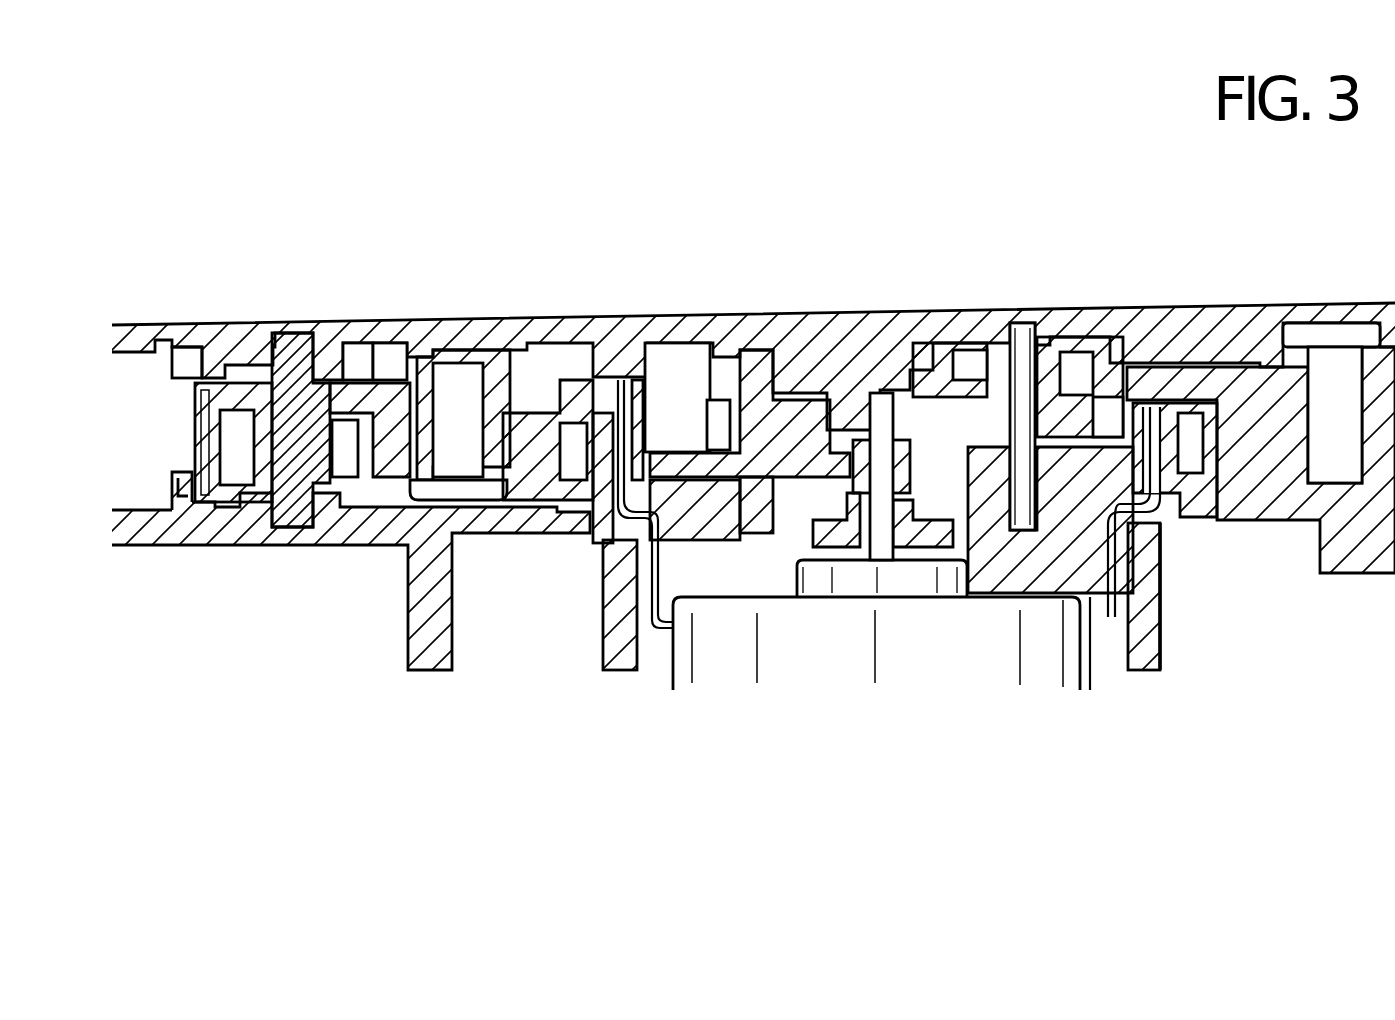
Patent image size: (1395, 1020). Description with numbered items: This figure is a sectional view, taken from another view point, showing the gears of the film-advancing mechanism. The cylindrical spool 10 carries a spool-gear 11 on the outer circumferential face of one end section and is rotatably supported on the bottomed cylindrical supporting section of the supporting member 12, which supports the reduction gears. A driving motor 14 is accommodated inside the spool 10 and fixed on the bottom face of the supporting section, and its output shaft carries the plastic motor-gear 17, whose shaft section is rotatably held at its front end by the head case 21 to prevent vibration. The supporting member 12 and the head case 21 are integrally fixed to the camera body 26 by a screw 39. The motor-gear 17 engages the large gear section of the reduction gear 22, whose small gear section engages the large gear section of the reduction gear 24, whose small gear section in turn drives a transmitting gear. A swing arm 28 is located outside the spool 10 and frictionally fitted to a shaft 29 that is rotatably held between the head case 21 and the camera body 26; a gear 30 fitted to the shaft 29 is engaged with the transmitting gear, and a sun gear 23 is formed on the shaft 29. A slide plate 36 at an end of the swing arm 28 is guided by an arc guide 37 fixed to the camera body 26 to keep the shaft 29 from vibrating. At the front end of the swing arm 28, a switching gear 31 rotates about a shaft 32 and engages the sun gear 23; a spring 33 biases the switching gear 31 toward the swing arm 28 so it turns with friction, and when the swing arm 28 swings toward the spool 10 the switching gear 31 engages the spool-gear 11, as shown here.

The spool 10 is at (1150, 632).
The spool-gear 11 is at (1193, 455).
The supporting member 12 is at (1207, 367).
The driving motor 14 is at (1088, 665).
The motor-gear 17 is at (883, 392).
The head case 21 is at (627, 320).
The reduction gear 22 is at (757, 410).
The sun gear 23 is at (243, 470).
The reduction gear 24 is at (1043, 360).
The camera body 26 is at (230, 533).
The swing arm 28 is at (372, 370).
The shaft 29 is at (296, 455).
The gear 30 is at (208, 355).
The switching gear 31 is at (373, 463).
The shaft 32 is at (547, 473).
The spring 33 is at (505, 438).
The slide plate 36 is at (207, 482).
The stop element 37 is at (175, 483).
The screw 39 is at (1307, 323).